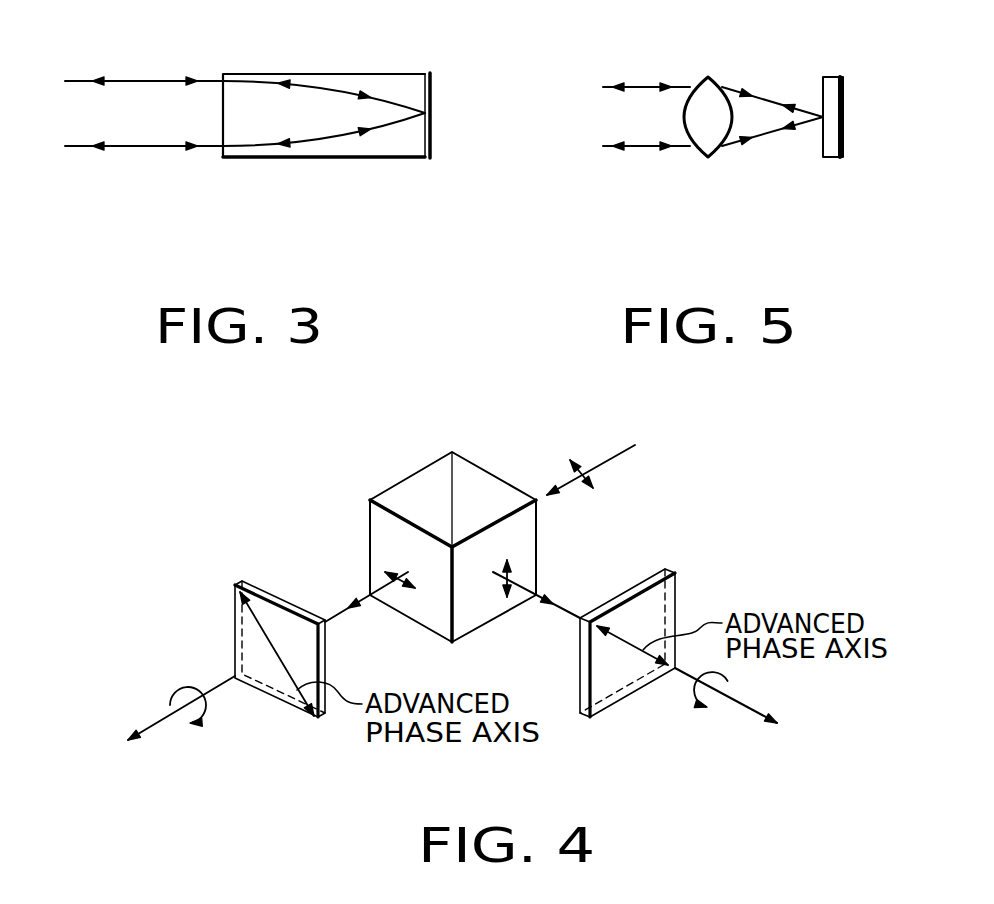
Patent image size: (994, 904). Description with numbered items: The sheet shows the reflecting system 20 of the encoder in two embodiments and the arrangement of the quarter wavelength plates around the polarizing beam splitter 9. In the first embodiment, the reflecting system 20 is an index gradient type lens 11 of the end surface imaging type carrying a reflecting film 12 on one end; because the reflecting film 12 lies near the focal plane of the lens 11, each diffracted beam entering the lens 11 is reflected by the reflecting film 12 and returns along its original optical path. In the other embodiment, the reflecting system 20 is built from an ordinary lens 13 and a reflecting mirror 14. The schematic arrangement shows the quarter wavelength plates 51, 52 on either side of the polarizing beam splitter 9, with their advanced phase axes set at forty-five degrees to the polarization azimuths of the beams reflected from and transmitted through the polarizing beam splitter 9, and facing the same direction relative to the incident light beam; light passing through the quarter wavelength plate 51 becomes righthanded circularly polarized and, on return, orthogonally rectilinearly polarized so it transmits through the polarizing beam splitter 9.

In FIG. 3, the reflecting system 20 is at (363, 68).
In FIG. 5, the reflecting system 20 is at (780, 95).
In FIG. 3, the index gradient type lens 11 is at (363, 147).
In FIG. 3, the reflecting film 12 is at (432, 142).
In FIG. 5, the ordinary lens 13 is at (712, 143).
In FIG. 5, the reflecting mirror 14 is at (837, 157).
In FIG. 4, the polarizing beam splitter 9 is at (523, 538).
In FIG. 4, the quarter wavelength plate 51 is at (673, 593).
In FIG. 4, the quarter wavelength plate 52 is at (322, 655).